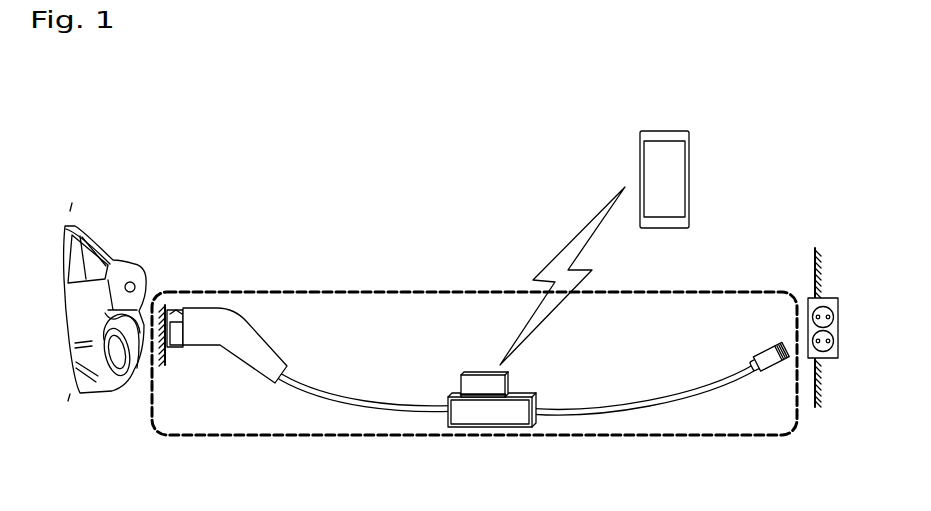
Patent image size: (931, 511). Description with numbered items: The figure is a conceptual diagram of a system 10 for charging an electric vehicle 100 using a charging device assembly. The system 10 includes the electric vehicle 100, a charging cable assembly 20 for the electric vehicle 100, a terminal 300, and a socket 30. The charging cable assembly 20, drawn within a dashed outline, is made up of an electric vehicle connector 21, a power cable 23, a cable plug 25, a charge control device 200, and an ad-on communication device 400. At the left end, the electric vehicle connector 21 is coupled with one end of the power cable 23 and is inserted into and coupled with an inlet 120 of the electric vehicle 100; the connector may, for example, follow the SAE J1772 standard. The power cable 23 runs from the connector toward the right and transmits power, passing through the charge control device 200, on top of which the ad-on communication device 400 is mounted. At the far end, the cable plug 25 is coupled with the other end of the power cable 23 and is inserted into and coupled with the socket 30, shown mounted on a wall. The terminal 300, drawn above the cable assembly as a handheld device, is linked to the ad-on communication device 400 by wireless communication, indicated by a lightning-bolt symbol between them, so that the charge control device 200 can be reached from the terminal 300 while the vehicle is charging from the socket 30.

The system 10 is at (102, 100).
The electric vehicle 100 is at (100, 245).
The inlet 120 is at (132, 282).
The charging cable assembly 20 is at (325, 291).
The electric vehicle connector 21 is at (268, 356).
The power cable 23 is at (378, 396).
The cable plug 25 is at (758, 353).
The socket 30 is at (835, 297).
The charge control device 200 is at (490, 428).
The terminal 300 is at (663, 131).
The ad-on communication device 400 is at (479, 374).